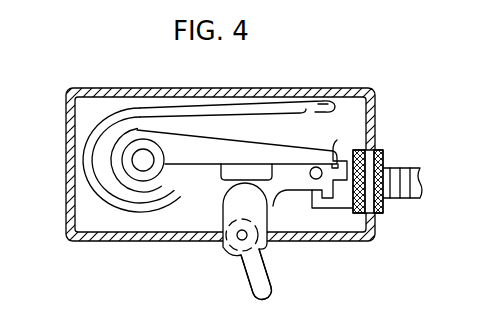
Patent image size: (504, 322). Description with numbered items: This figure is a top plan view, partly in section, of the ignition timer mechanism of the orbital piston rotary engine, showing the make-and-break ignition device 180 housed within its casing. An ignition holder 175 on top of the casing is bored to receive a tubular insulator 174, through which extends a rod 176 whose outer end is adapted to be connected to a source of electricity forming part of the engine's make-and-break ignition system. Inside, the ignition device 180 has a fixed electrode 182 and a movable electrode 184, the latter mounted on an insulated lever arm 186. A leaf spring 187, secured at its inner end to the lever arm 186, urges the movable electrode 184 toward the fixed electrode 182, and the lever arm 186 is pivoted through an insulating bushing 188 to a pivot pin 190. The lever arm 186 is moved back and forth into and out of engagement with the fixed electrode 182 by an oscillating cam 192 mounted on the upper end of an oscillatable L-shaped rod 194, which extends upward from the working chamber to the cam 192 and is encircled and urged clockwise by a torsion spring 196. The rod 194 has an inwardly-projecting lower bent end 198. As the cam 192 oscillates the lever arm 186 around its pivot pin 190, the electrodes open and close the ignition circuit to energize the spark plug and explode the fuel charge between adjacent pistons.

The make-and-break ignition device 180 is at (77, 82).
The ignition holder 175 is at (134, 89).
The leaf spring 187 is at (244, 98).
The insulated lever arm 186 is at (275, 138).
The insulating bushing 188 is at (163, 148).
The movable electrode 184 is at (334, 148).
The fixed electrode 182 is at (274, 197).
The tubular insulator 174 is at (383, 151).
The rod 176 is at (407, 168).
The pivot pin 190 is at (140, 166).
The oscillating cam 192 is at (227, 208).
The oscillatable L-shaped rod 194 is at (228, 254).
The torsion spring 196 is at (239, 270).
The inwardly-projecting lower bent end 198 is at (271, 280).